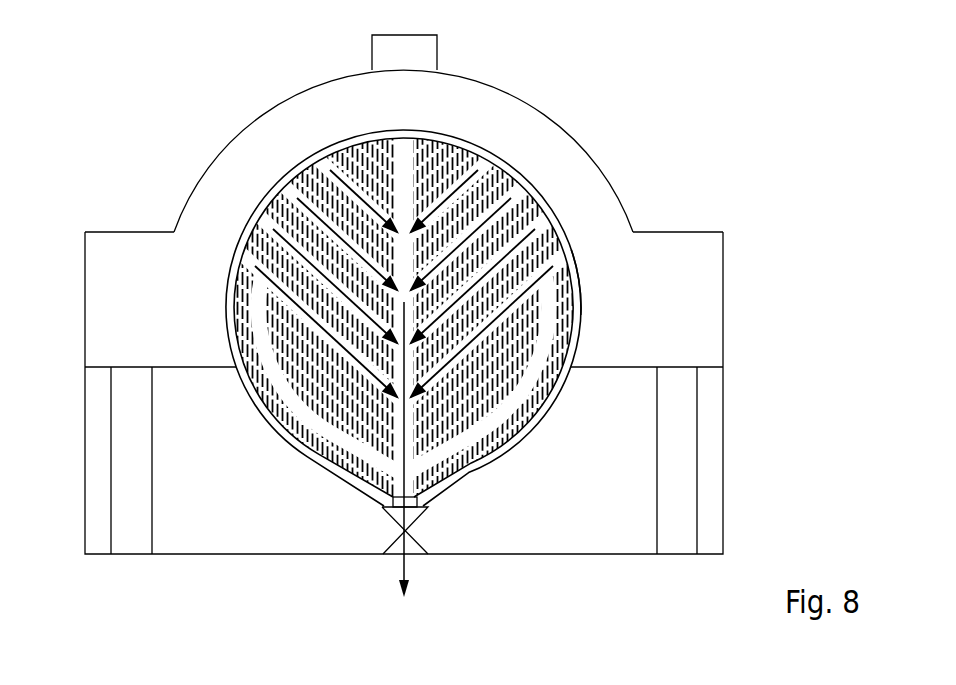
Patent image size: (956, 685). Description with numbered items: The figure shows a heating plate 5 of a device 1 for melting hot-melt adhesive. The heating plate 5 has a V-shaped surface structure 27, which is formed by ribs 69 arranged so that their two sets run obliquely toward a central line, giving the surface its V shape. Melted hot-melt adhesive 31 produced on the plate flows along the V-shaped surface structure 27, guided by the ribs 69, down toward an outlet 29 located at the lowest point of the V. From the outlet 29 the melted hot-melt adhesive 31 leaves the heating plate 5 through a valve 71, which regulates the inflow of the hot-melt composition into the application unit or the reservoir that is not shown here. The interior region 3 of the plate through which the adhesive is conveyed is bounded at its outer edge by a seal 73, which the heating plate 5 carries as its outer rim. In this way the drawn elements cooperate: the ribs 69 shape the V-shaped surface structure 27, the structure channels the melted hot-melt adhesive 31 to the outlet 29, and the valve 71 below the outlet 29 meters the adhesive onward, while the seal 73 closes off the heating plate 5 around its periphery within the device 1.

The apparatus 1 is at (690, 158).
The reactor interior 3 is at (497, 327).
The heating plate 5 is at (448, 131).
The V-shaped surface structure 27 is at (580, 282).
The outlet 29 is at (389, 500).
The melted hot-melt adhesive 31 is at (400, 572).
The ribs 69 is at (525, 300).
The valve 71 is at (420, 530).
The seal 73 is at (490, 152).